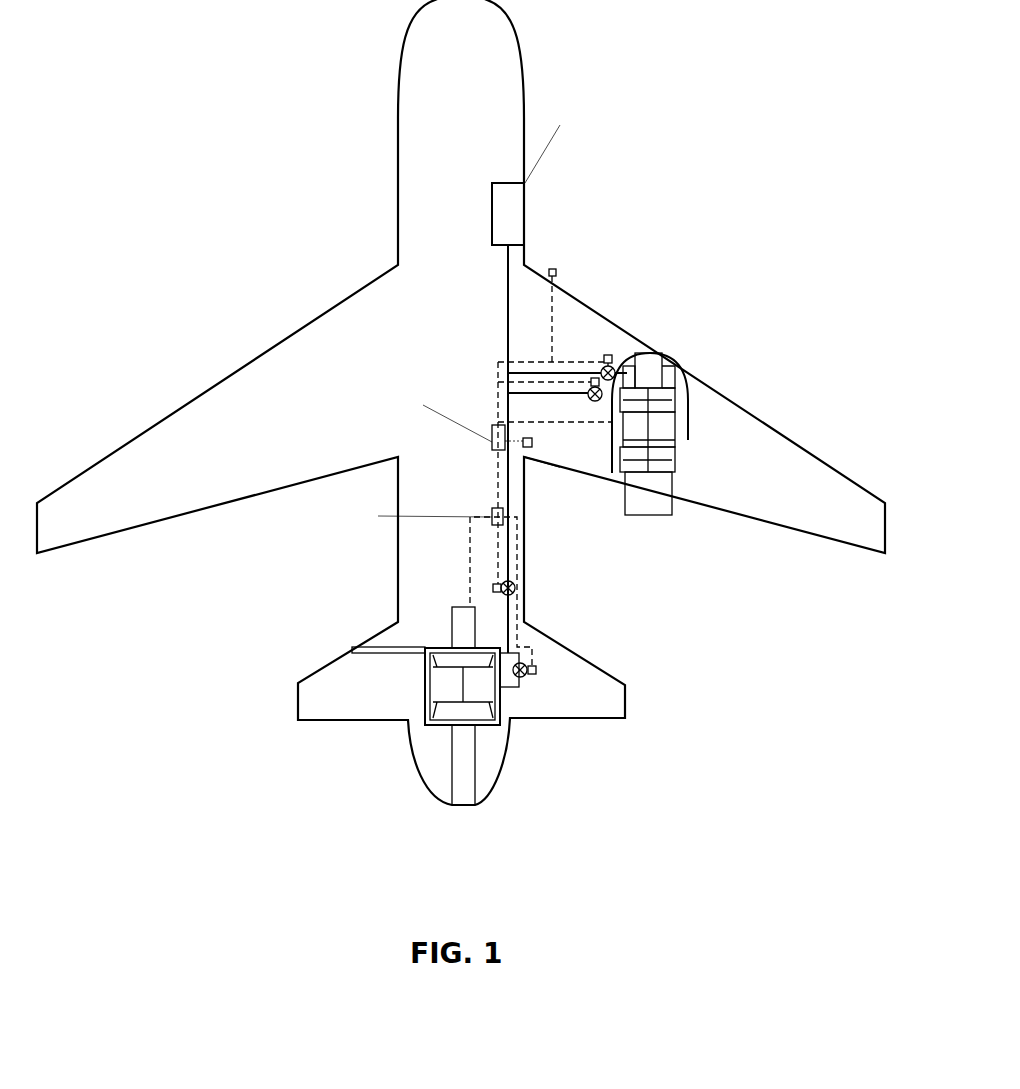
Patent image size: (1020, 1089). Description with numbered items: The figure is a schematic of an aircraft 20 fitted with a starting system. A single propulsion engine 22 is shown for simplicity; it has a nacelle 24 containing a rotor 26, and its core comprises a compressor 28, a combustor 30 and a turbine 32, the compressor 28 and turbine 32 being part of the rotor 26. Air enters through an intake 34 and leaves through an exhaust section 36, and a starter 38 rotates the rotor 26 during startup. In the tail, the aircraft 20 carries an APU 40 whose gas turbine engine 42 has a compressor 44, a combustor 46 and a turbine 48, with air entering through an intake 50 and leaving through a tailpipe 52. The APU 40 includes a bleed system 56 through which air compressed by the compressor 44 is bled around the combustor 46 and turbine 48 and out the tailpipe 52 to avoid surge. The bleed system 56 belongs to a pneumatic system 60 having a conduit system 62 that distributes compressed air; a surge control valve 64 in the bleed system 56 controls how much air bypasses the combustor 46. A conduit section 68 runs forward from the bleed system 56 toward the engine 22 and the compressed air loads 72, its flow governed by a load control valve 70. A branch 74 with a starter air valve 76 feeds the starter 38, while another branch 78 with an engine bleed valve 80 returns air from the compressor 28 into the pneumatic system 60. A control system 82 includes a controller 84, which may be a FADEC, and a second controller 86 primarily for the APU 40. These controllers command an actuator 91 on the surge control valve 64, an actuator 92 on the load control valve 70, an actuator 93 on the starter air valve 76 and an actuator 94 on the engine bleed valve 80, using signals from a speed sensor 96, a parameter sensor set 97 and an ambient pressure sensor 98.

The aircraft 20 is at (634, 214).
The engine 22 is at (698, 422).
The nacelle 24 is at (690, 375).
The rotor 26 is at (680, 451).
The compressor 28 is at (662, 402).
The combustor 30 is at (664, 433).
The turbine 32 is at (668, 446).
The intake 34 is at (656, 364).
The exhaust section 36 is at (665, 515).
The starter 38 is at (637, 356).
The APU 40 is at (446, 620).
The gas turbine engine 42 is at (419, 685).
The compressor 44 is at (443, 659).
The combustor 46 is at (480, 685).
The turbine 48 is at (472, 705).
The intake 50 is at (400, 643).
The tailpipe 52 is at (463, 767).
The bleed system 56 is at (527, 692).
The pneumatic system 60 is at (501, 303).
The conduit system 62 is at (520, 482).
The surge control valve 64 is at (538, 674).
The conduit section 68 is at (506, 552).
The load control valve 70 is at (516, 592).
The compressed air loads 72 is at (515, 203).
The branch 74 is at (594, 356).
The starter air valve 76 is at (643, 350).
The branch 78 is at (534, 443).
The engine bleed valve 80 is at (573, 397).
The control system 82 is at (489, 466).
The controller 84 is at (492, 437).
The second controller 86 is at (490, 515).
The actuator 91 is at (538, 670).
The actuator 92 is at (494, 587).
The actuator 93 is at (612, 353).
The actuator 94 is at (598, 372).
The speed sensor 96 is at (597, 402).
The parameter sensor set 97 is at (532, 463).
The ambient pressure sensor 98 is at (554, 268).